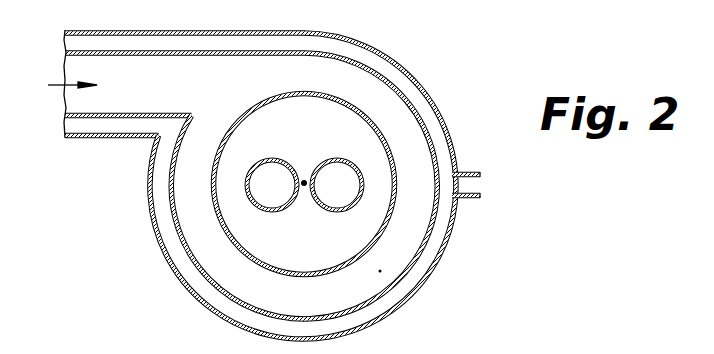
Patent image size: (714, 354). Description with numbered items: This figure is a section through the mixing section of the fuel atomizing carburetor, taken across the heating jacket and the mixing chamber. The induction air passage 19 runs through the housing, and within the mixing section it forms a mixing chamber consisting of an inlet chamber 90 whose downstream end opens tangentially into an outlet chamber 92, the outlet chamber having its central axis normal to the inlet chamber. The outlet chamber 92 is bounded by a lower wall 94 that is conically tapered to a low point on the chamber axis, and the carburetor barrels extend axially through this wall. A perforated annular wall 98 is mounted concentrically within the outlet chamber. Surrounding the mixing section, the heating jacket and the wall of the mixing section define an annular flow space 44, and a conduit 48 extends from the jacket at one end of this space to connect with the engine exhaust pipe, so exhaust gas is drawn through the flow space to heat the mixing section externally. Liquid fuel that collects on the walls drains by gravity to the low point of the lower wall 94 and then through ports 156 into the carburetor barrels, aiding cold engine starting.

The inlet chamber 90 is at (72, 98).
The annular flow space 44 is at (437, 249).
The outlet chamber 92 is at (407, 118).
The conduit 48 is at (480, 183).
The perforated annular wall 98 is at (323, 274).
The lower wall 94 is at (380, 272).
The induction air passage 19 is at (273, 197).
The ports 156 is at (303, 180).